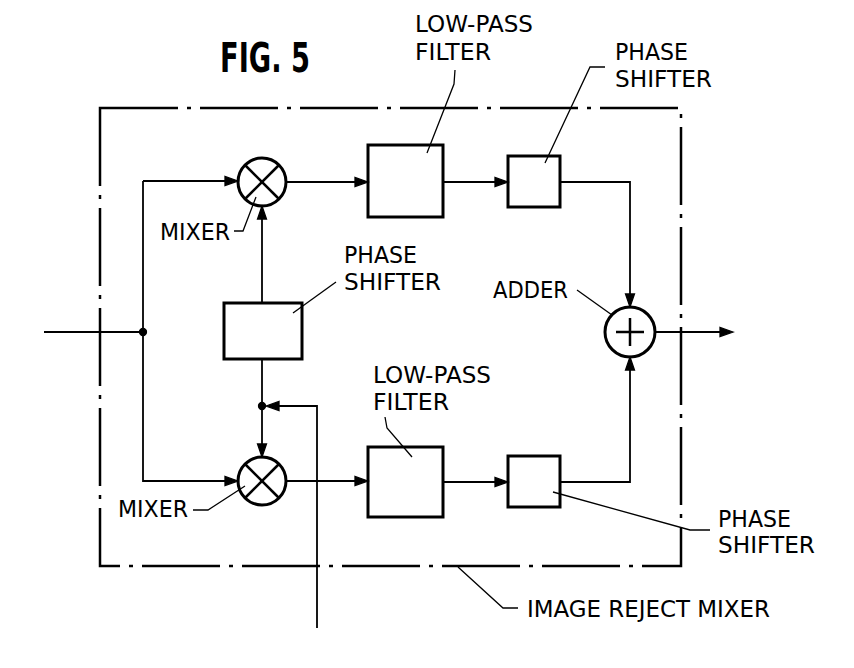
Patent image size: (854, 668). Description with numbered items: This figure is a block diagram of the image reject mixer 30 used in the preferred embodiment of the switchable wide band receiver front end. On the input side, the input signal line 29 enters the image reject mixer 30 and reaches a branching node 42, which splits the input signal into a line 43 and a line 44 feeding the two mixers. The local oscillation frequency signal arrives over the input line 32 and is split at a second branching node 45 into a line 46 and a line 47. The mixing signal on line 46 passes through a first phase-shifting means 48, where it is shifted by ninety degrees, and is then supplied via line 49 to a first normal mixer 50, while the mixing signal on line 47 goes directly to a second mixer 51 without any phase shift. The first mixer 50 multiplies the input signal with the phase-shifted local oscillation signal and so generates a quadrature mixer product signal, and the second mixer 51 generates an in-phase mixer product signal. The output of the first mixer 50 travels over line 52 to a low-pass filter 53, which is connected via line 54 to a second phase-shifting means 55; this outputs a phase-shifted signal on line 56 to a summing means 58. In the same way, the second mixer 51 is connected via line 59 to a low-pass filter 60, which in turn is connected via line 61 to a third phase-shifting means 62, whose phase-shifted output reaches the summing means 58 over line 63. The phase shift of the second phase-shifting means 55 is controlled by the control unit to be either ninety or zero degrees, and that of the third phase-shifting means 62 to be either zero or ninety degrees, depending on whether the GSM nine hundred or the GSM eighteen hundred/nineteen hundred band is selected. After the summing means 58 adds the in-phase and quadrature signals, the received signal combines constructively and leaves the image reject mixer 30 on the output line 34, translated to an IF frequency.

The input signal line 29 is at (73, 330).
The image reject mixer 30 is at (603, 565).
The input line 32 is at (317, 598).
The output signal line 34 is at (700, 328).
The branching node 42 is at (146, 330).
The line 43 is at (180, 180).
The line 44 is at (172, 480).
The branching node 45 is at (259, 406).
The line 46 is at (263, 383).
The line 47 is at (261, 426).
The first phase-shifting means 48 is at (305, 332).
The line 49 is at (263, 270).
The first normal mixer 50 is at (285, 164).
The second mixer 51 is at (247, 502).
The line 52 is at (315, 186).
The low-pass filter 53 is at (405, 181).
The line 54 is at (477, 180).
The second phase-shifting means 55 is at (534, 181).
The line 56 is at (630, 240).
The summing means 58 is at (605, 333).
The line 59 is at (333, 485).
The low-pass filter 60 is at (405, 482).
The line 61 is at (476, 480).
The third phase-shifting means 62 is at (534, 481).
The line 63 is at (630, 425).